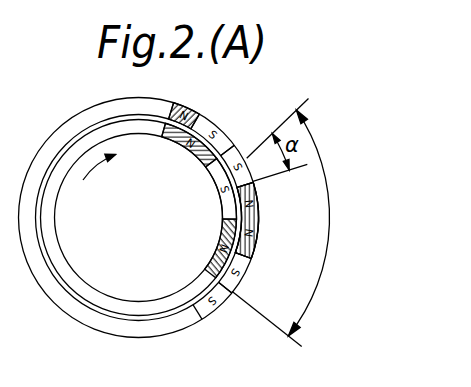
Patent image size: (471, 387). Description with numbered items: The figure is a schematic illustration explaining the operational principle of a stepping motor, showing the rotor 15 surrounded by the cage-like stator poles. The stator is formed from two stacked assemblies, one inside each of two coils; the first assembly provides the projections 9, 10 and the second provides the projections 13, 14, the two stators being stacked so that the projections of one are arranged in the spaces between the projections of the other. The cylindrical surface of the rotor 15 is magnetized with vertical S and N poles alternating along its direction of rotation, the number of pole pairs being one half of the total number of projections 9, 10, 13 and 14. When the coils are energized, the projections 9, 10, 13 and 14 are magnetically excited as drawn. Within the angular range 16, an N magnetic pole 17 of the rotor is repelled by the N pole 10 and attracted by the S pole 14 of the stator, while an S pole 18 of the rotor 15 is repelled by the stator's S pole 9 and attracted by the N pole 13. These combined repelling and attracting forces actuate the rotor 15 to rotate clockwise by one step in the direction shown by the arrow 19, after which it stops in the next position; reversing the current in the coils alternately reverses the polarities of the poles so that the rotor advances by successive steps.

The projection 9 is at (247, 168).
The projection 10 is at (252, 240).
The projection 13 is at (253, 210).
The projection 14 is at (214, 127).
The rotor 15 is at (89, 267).
The angular range 16 is at (286, 223).
The N magnetic pole 17 is at (222, 233).
The S pole 18 is at (213, 181).
The arrow 19 is at (83, 181).